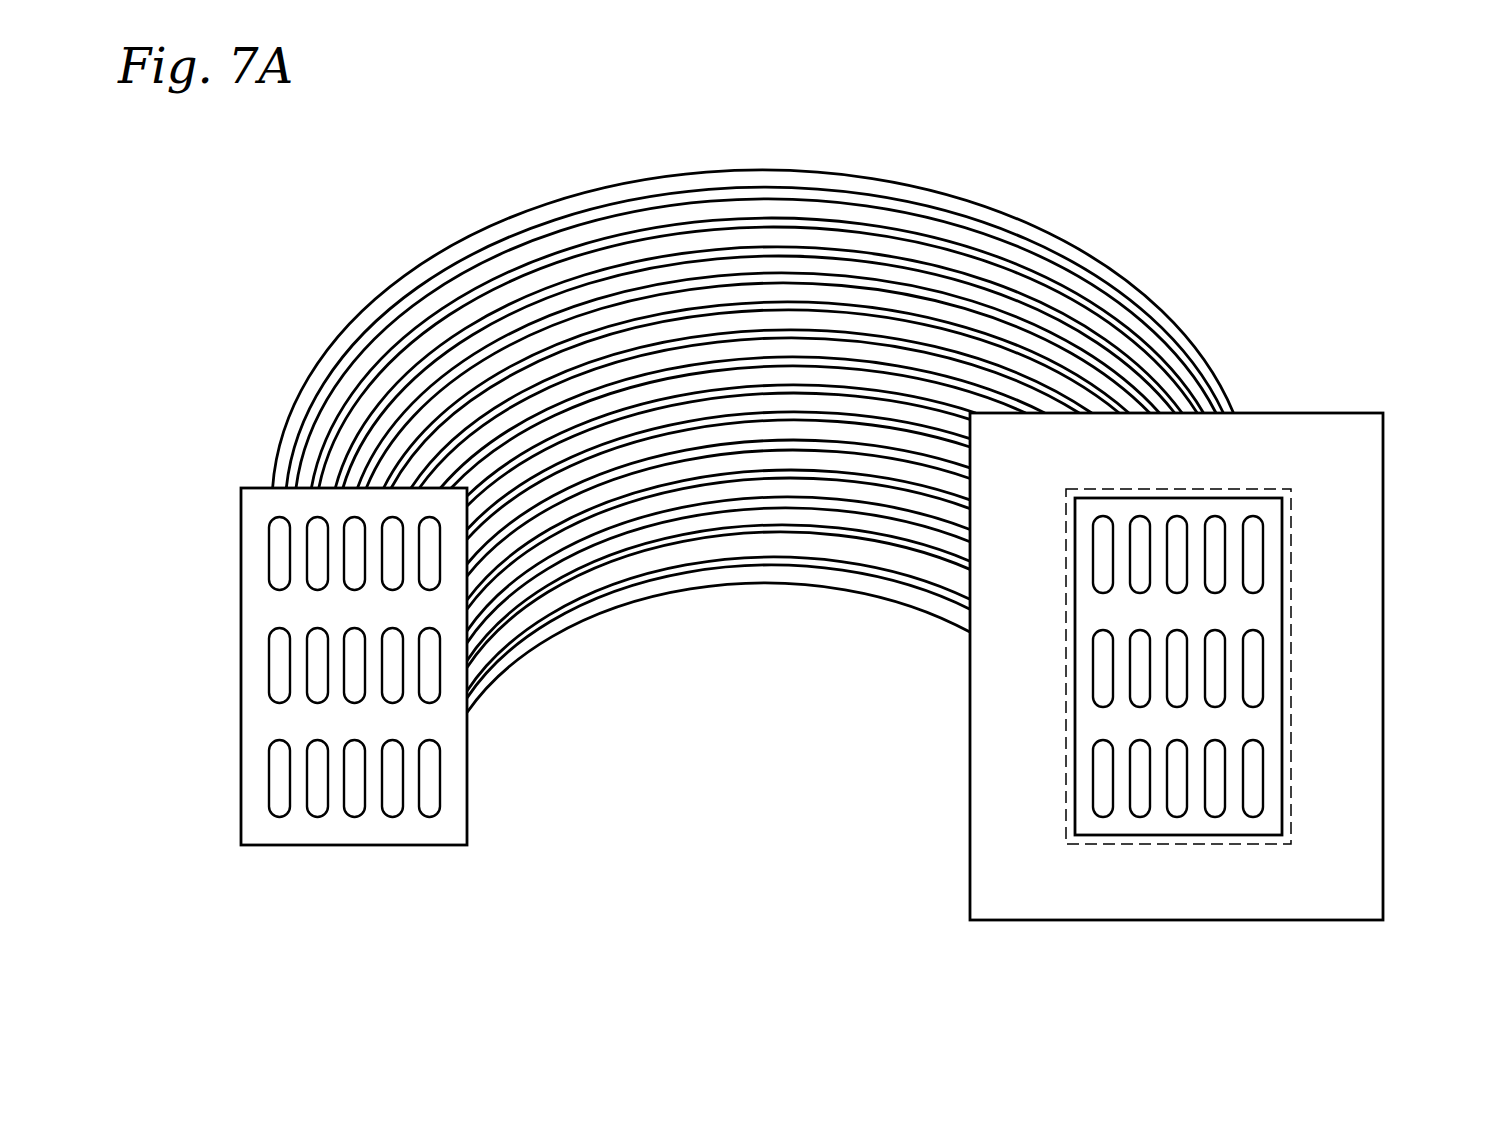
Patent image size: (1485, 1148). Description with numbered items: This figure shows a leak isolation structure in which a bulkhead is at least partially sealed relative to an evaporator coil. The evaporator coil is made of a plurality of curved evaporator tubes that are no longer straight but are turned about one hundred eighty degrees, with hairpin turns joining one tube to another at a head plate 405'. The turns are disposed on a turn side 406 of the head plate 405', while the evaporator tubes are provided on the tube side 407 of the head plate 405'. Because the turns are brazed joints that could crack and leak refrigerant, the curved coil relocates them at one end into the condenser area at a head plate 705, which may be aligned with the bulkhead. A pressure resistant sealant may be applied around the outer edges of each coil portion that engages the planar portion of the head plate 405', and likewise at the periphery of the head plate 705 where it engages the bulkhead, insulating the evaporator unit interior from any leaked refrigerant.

The head plate 405' is at (794, 725).
The turn side 406 is at (1268, 724).
The tube side 407 is at (1284, 458).
The head plate 705 is at (970, 810).